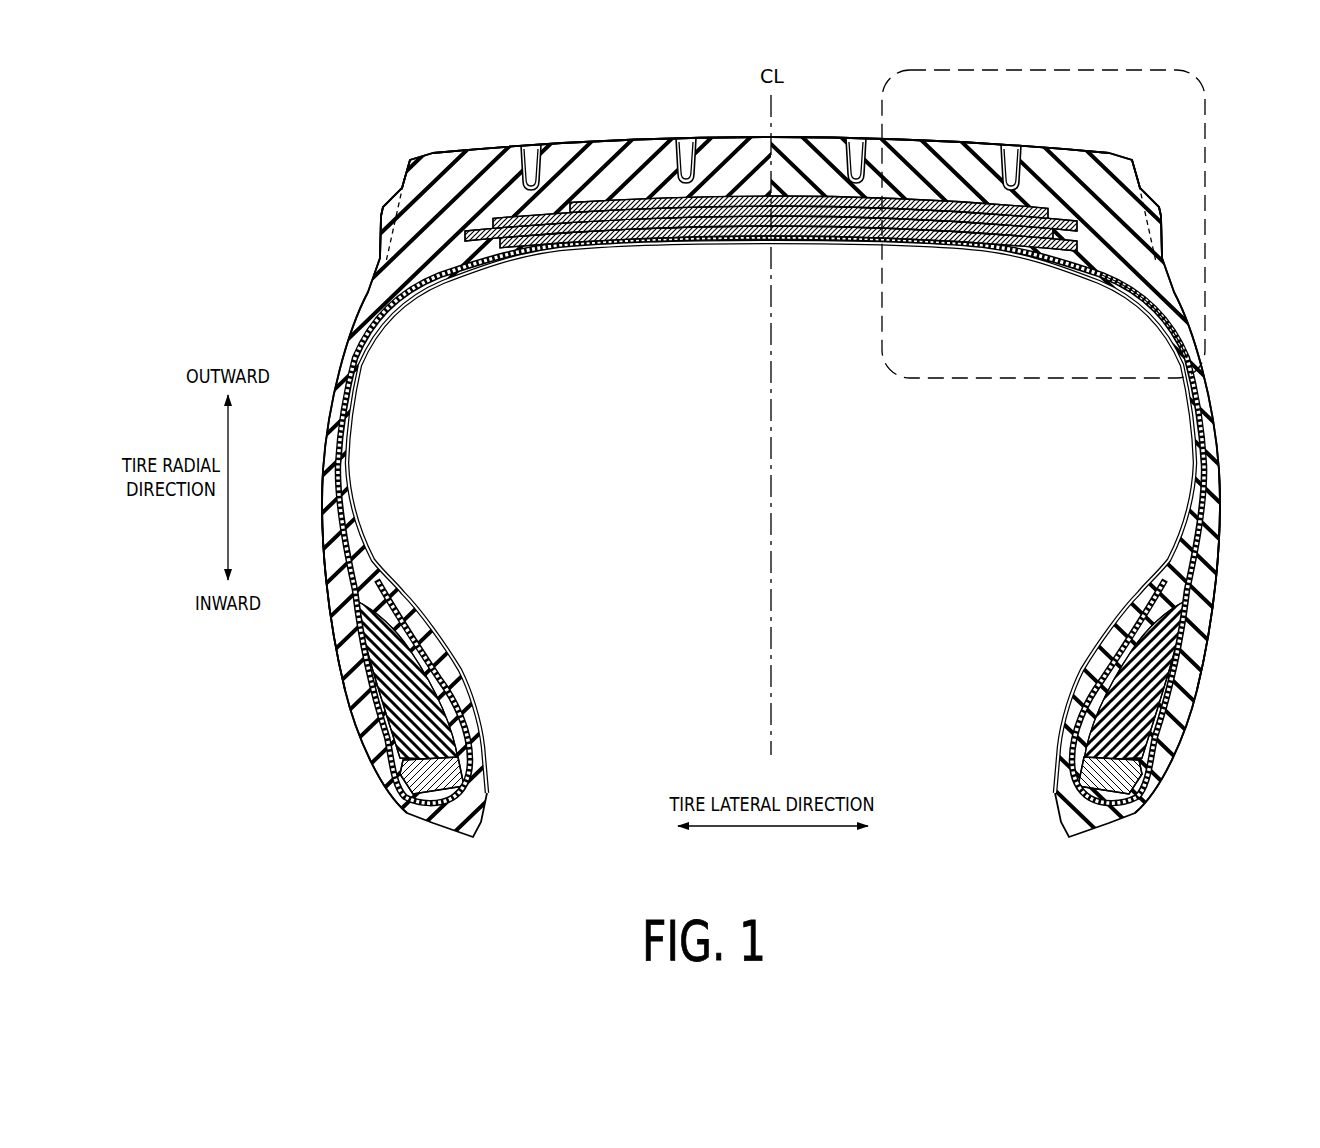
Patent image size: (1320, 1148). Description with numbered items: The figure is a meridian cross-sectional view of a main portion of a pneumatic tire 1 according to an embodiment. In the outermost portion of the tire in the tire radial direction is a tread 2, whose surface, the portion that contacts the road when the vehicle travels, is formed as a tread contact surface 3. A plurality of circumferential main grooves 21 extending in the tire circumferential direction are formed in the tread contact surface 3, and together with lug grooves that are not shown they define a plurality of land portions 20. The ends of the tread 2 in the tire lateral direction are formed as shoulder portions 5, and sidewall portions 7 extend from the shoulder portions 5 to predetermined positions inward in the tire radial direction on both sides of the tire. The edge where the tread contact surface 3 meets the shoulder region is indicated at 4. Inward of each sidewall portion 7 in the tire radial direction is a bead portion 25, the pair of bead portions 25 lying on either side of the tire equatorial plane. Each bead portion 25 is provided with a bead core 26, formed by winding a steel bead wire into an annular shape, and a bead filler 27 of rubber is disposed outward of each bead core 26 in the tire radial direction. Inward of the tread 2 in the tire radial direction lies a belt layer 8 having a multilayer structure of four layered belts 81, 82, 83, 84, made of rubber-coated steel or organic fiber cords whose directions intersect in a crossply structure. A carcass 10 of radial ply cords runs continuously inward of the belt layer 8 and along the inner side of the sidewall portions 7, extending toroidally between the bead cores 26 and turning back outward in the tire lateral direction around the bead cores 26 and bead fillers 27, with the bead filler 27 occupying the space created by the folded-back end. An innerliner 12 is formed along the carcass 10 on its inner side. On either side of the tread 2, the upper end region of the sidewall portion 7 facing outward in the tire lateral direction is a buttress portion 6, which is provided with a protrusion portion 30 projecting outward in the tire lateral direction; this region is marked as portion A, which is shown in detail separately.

The pneumatic tire 1 is at (384, 95).
The tread 2 is at (945, 172).
The tread contact surface 3 is at (1040, 150).
The shoulder edge 4 is at (410, 160).
The shoulder portion 5 is at (400, 156).
The buttress portion 6 is at (375, 196).
The sidewall portion 7 is at (322, 450).
The belt layer 8 is at (771, 267).
The carcass 10 is at (1113, 262).
The innerliner 12 is at (1190, 414).
The land portion 20 is at (470, 148).
The circumferential main groove 21 is at (531, 147).
The bead portion 25 is at (341, 710).
The bead core 26 is at (420, 772).
The bead filler 27 is at (390, 660).
The protrusion portion 30 is at (380, 222).
The belt 81 is at (1018, 249).
The belt 82 is at (985, 244).
The belt 83 is at (943, 242).
The belt 84 is at (1048, 302).
The portion A is at (1212, 148).